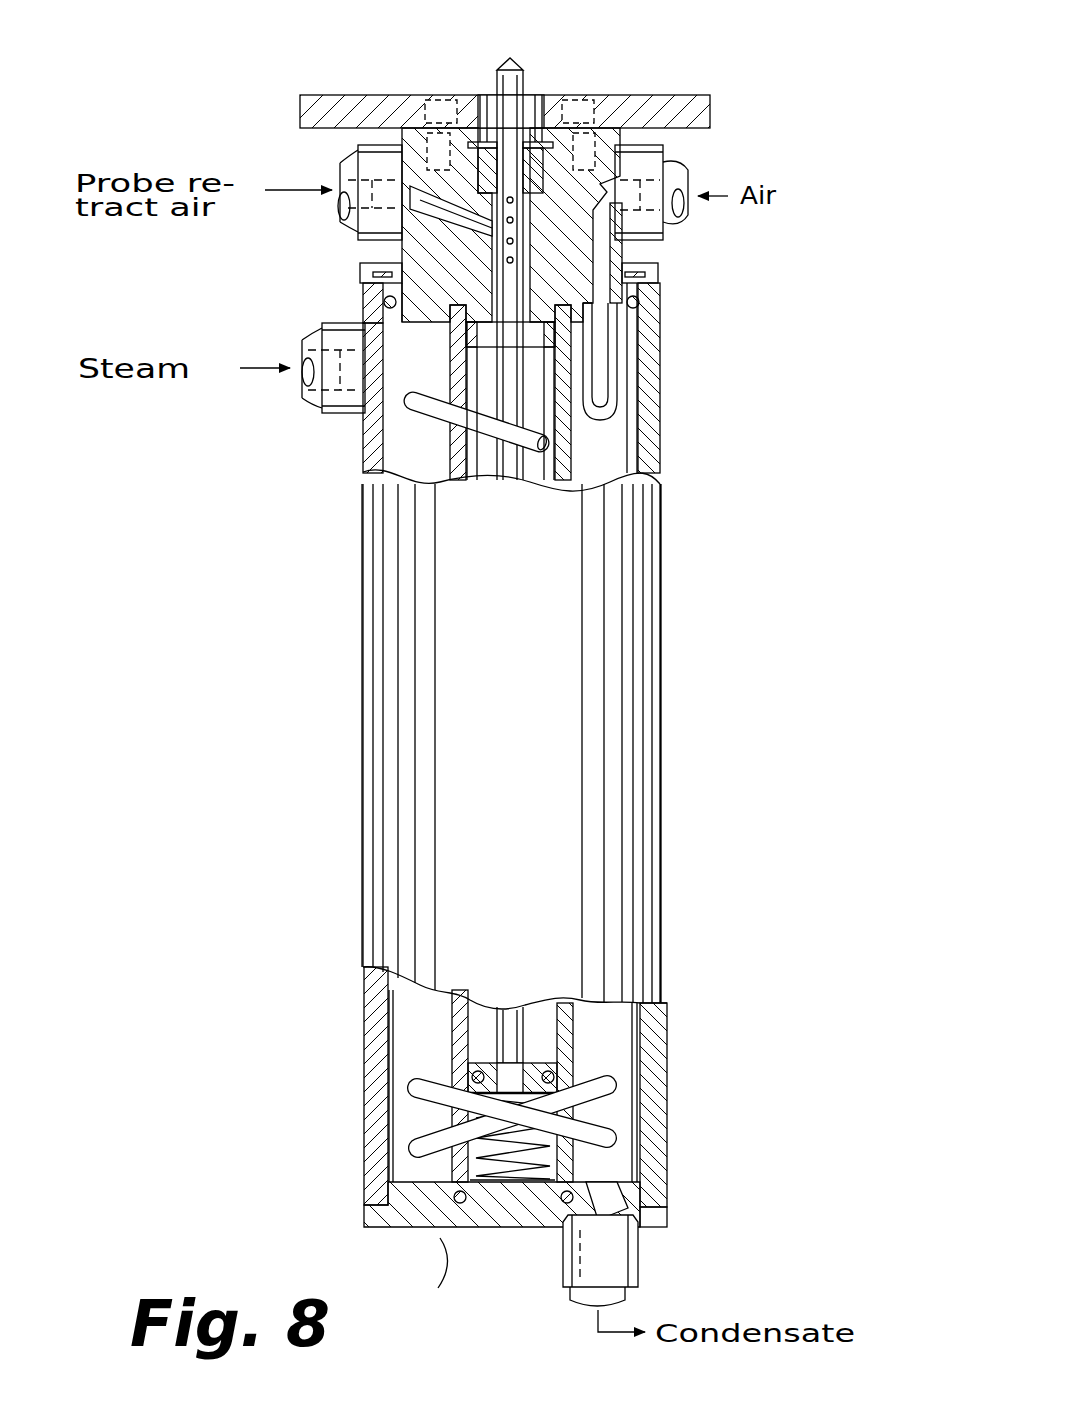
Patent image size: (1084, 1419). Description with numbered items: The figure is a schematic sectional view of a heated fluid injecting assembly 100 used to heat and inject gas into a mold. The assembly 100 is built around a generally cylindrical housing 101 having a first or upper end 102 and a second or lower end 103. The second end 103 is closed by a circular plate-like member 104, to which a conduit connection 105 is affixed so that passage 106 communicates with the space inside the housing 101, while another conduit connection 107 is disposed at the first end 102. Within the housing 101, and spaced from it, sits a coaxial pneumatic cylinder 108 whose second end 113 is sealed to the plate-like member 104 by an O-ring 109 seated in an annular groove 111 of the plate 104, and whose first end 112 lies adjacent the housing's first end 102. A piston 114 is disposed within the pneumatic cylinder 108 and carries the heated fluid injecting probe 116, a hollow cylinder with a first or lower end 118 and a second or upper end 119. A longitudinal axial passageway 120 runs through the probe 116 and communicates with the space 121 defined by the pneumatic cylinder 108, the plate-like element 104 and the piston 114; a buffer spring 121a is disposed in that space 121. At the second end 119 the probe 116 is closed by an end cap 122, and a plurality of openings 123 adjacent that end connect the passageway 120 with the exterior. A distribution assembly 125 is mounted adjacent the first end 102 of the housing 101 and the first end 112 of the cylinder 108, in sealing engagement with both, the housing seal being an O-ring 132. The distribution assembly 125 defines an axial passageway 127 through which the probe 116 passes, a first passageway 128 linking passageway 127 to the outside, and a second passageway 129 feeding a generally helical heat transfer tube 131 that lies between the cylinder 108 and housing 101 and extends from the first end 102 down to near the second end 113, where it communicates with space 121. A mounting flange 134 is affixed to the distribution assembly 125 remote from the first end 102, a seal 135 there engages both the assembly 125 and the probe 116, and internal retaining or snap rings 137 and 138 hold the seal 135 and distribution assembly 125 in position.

The heated fluid injecting assembly 100 is at (238, 120).
The cylindrical housing 101 is at (650, 455).
The first end of housing 102 is at (372, 292).
The second end of housing 103 is at (372, 1170).
The circular plate-like member 104 is at (372, 1228).
The conduit connection 105 is at (640, 1258).
The passage 106 is at (595, 1210).
The conduit connection 107 is at (300, 350).
The pneumatic cylinder 108 is at (458, 480).
The O-ring 109 is at (427, 1271).
The annular groove 111 is at (548, 1205).
The first end of pneumatic cylinder 112 is at (458, 360).
The second end of pneumatic cylinder 113 is at (458, 1205).
The piston 114 is at (490, 1066).
The probe 116 is at (470, 1030).
The first end of probe 118 is at (520, 1066).
The second end of probe 119 is at (503, 80).
The longitudinal axial passageway 120 is at (515, 1020).
The space 121 is at (430, 1143).
The buffer spring 121a is at (566, 1205).
The end cap 122 is at (518, 68).
The openings 123 is at (510, 258).
The distribution assembly 125 is at (420, 250).
The axially disposed passageway 127 is at (530, 247).
The first passageway 128 is at (345, 200).
The second passageway 129 is at (600, 197).
The heat transfer tube 131 is at (586, 400).
The O-ring 132 is at (637, 300).
The mounting flange 134 is at (372, 100).
The seal 135 is at (578, 137).
The internal retaining ring 137 is at (556, 128).
The internal retaining ring 138 is at (375, 263).